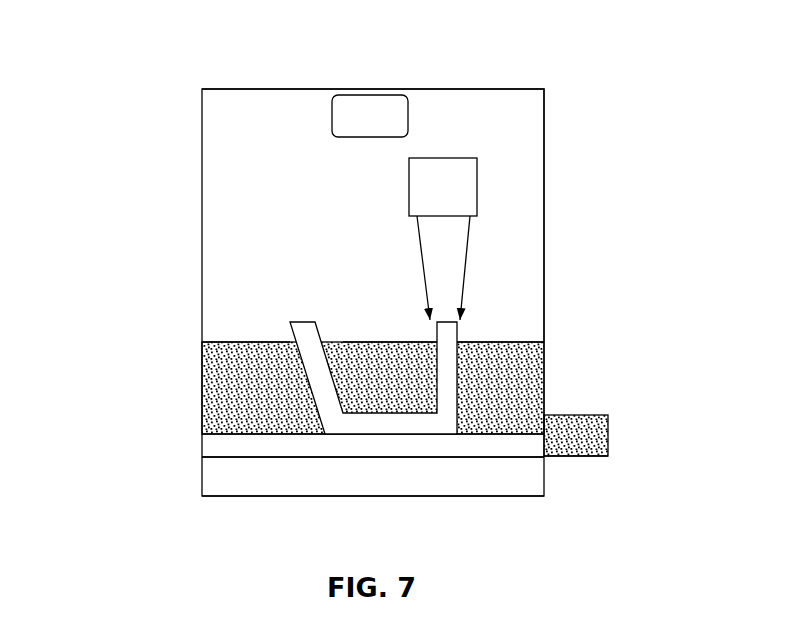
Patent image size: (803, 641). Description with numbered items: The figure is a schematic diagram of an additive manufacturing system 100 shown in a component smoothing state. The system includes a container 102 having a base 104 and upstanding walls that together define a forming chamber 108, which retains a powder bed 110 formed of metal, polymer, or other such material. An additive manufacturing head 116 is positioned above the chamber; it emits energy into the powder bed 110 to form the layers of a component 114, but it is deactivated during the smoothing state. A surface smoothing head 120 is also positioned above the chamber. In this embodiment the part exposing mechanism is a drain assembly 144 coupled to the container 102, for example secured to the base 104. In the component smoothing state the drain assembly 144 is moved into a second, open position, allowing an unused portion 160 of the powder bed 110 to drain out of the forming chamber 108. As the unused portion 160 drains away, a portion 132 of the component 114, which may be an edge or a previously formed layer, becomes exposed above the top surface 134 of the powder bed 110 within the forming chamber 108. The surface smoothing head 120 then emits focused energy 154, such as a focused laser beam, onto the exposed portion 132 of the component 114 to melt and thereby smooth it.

The additive manufacturing system 100 is at (147, 50).
The container 102 is at (344, 499).
The base 104 is at (272, 448).
The forming chamber 108 is at (260, 237).
The powder bed 110 is at (222, 342).
The component 114 is at (308, 362).
The additive manufacturing head 116 is at (330, 117).
The surface smoothing head 120 is at (465, 187).
The portion of the component 132 is at (458, 335).
The top surface of the powder bed 134 is at (252, 342).
The drain assembly 144 is at (587, 467).
The focused energy 154 is at (468, 272).
The unused portion of the powder bed 160 is at (592, 438).